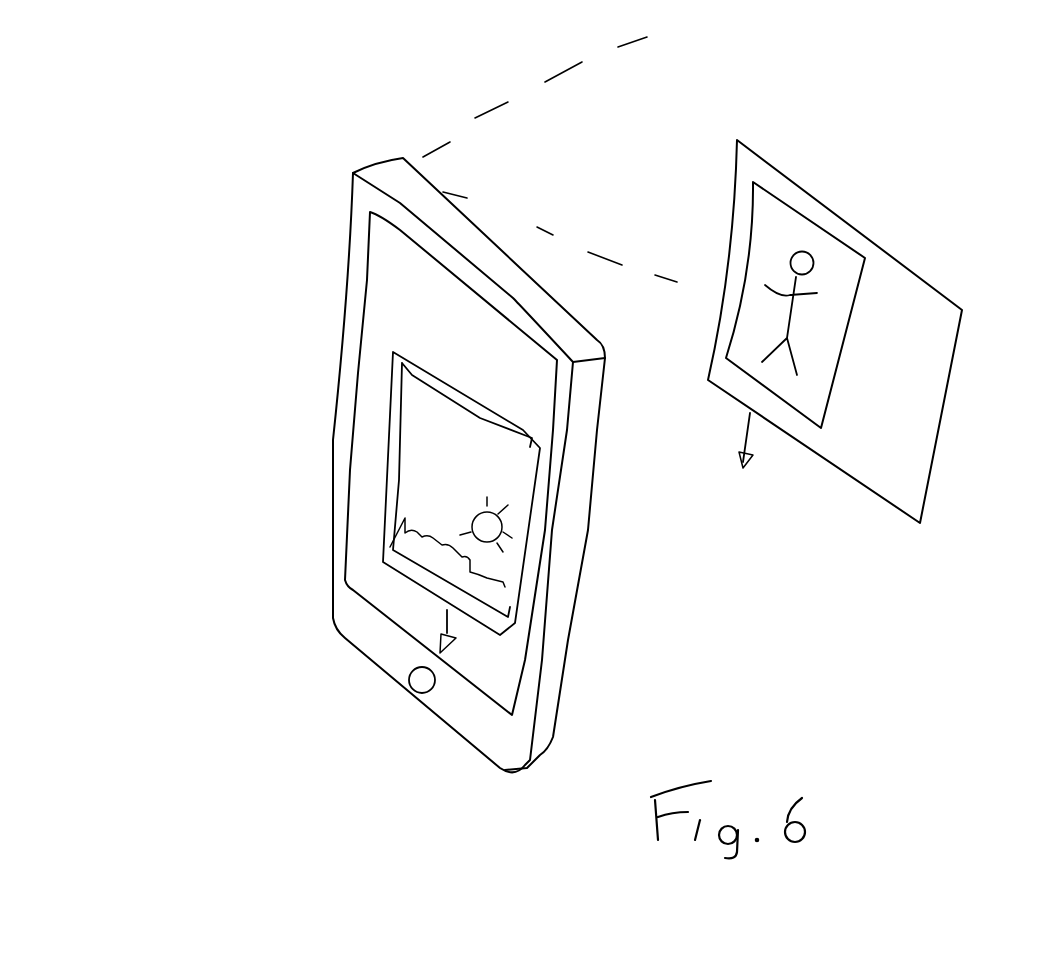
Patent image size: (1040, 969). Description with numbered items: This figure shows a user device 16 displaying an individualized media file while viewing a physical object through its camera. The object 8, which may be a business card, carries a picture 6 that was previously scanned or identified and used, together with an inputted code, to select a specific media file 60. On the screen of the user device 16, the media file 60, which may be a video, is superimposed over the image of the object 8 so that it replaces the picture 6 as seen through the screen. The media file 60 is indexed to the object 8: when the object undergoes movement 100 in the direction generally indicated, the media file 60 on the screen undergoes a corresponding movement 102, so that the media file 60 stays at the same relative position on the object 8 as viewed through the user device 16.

The user device 16 is at (566, 644).
The media file 60 is at (387, 447).
The corresponding movement 102 is at (440, 623).
The object 8 is at (927, 278).
The picture 6 is at (833, 237).
The movement 100 is at (748, 442).